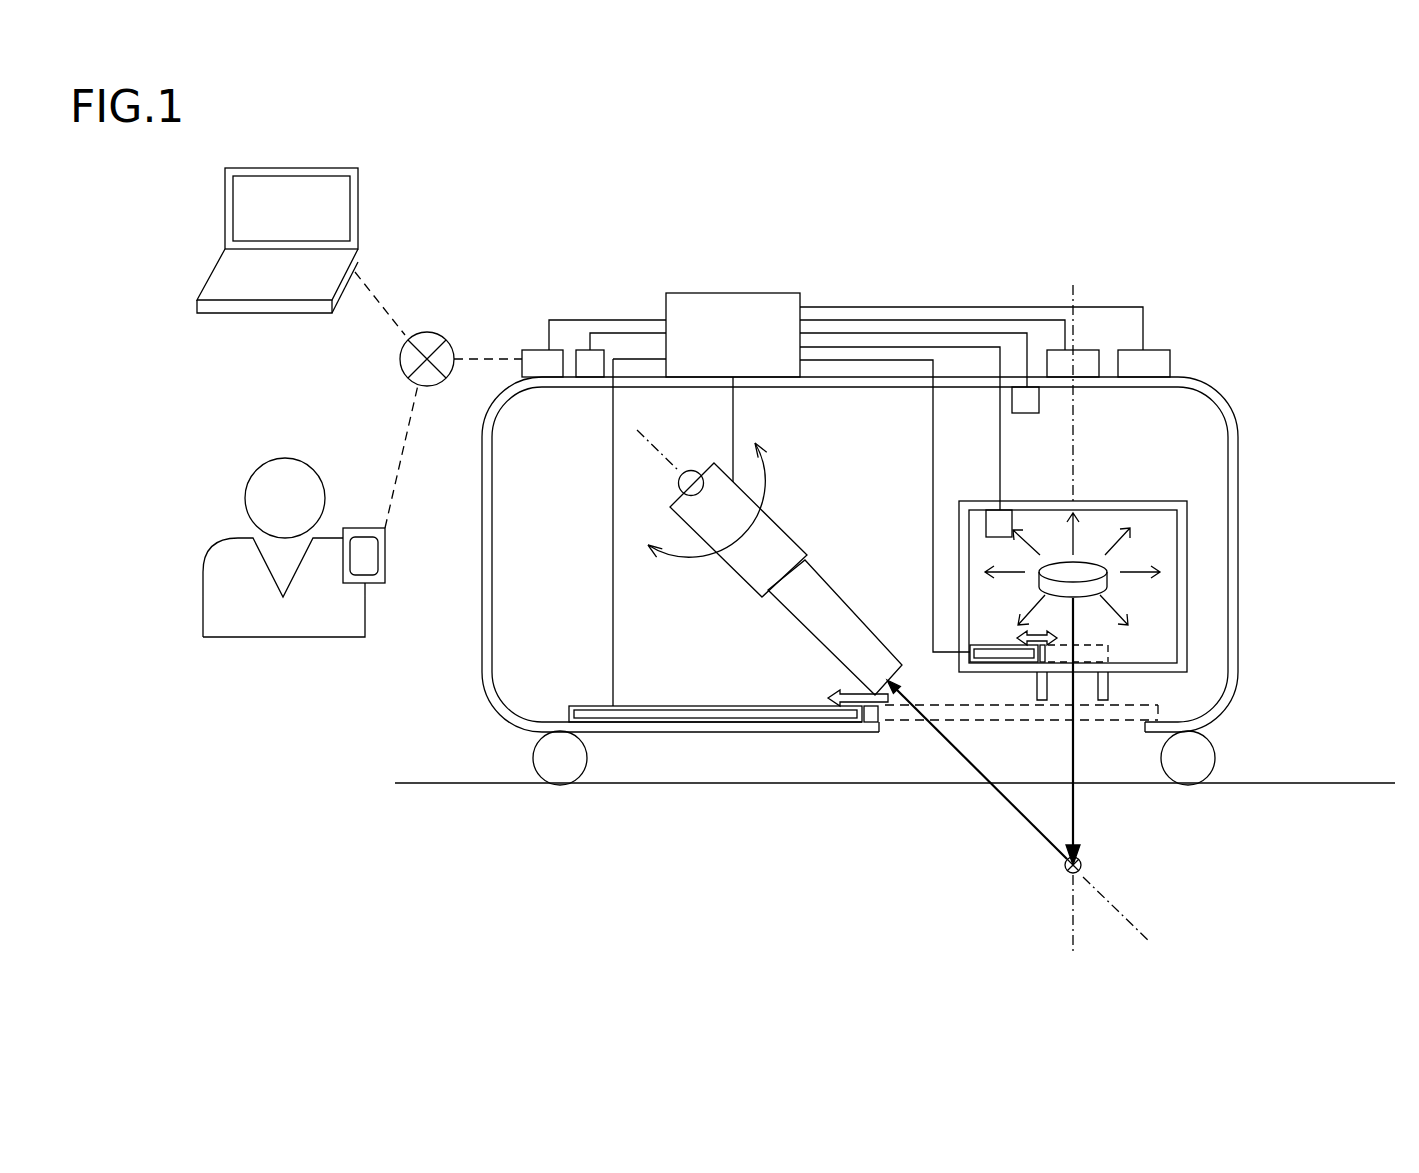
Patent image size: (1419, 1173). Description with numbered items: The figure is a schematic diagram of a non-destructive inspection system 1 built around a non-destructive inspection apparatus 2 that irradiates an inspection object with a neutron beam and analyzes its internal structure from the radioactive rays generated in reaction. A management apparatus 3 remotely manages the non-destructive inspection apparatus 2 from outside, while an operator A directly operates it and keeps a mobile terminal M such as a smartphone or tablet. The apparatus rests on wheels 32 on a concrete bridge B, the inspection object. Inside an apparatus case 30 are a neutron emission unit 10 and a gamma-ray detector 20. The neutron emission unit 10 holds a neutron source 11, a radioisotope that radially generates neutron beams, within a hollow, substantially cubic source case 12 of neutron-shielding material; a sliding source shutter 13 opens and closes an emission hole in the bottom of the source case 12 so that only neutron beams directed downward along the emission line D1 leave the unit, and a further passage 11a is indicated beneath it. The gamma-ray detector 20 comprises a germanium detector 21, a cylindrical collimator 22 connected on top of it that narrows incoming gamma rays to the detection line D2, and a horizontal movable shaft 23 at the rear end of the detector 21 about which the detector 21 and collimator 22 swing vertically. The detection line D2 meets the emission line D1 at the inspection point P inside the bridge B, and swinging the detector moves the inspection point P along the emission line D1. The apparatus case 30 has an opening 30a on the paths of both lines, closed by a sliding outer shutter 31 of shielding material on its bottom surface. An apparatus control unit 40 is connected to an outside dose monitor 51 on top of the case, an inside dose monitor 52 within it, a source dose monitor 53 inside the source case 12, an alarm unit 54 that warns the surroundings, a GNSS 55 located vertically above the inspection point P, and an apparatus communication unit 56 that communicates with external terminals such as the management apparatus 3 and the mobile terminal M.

The non-destructive inspection system 1 is at (820, 118).
The non-destructive inspection apparatus 2 is at (955, 270).
The management apparatus 3 is at (312, 155).
The operator A is at (283, 458).
The mobile terminal M is at (363, 528).
The neutron emission unit 10 is at (1170, 470).
The neutron source 11 is at (1085, 560).
The chamber opening 11a is at (1095, 680).
The source case 12 is at (1188, 570).
The source shutter 13 is at (995, 645).
The gamma-ray detector 20 is at (829, 532).
The detector 21 is at (770, 512).
The collimator 22 is at (848, 612).
The movable shaft 23 is at (692, 470).
The apparatus case 30 is at (1233, 376).
The opening 30a is at (878, 724).
The outer shutter 31 is at (678, 706).
The wheels 32 is at (533, 756).
The apparatus control unit 40 is at (733, 293).
The outside dose monitor 51 is at (590, 378).
The inside dose monitor 52 is at (1040, 412).
The source dose monitor 53 is at (1005, 510).
The alarm unit 54 is at (1150, 350).
The GNSS 55 is at (1088, 378).
The apparatus communication unit 56 is at (540, 350).
The bridge B is at (1363, 783).
The inspection point P is at (1082, 863).
The emission line D1 is at (1073, 637).
The detection line D2 is at (1128, 925).